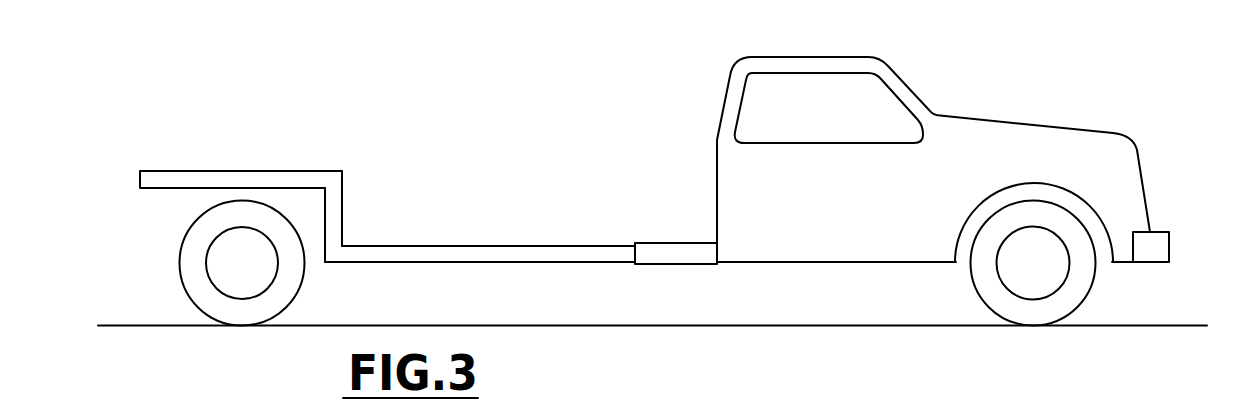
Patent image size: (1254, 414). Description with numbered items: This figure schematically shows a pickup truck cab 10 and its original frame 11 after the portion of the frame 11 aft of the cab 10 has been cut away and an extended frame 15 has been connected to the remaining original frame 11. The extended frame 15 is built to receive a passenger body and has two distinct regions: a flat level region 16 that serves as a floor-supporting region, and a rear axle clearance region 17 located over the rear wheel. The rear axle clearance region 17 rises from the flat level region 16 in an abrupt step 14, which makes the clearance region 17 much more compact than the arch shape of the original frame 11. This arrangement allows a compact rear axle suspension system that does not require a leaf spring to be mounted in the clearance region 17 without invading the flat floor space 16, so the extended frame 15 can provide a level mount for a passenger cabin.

The pickup truck cab 10 is at (1033, 125).
The frame 11 is at (675, 243).
The abrupt step 14 is at (342, 206).
The extended frame 15 is at (435, 253).
The flat level region 16 is at (530, 245).
The rear axle clearance region 17 is at (268, 173).